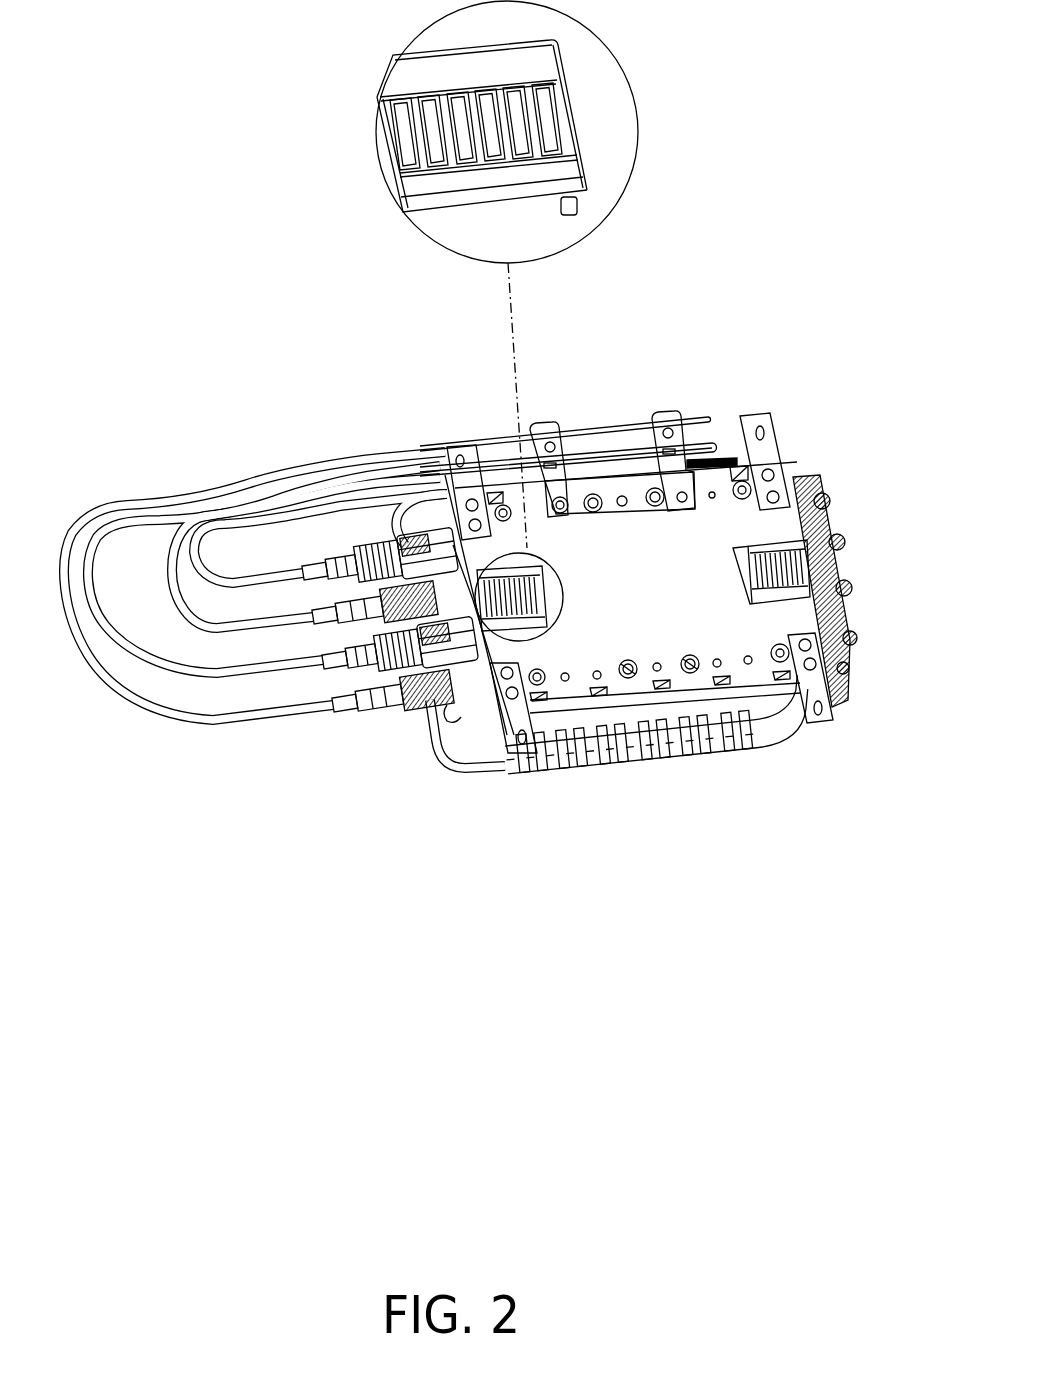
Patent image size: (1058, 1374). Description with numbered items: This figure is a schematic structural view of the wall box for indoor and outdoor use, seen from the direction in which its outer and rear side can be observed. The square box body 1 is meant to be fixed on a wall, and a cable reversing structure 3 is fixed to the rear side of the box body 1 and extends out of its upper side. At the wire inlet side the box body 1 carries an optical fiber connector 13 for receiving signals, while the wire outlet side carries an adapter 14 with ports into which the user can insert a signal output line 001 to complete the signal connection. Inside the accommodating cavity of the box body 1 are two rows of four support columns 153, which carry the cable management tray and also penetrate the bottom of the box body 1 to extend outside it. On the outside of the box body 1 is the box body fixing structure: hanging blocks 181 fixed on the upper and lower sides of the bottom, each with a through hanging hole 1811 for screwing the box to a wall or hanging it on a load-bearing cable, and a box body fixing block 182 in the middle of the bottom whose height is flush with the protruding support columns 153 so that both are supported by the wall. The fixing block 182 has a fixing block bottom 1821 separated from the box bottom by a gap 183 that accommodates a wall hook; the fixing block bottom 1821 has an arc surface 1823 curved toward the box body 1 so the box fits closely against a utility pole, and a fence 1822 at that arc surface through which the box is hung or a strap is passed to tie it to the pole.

The box body 1 is at (653, 617).
The cable reversing structure 3 is at (673, 472).
The optical fiber connector 13 is at (403, 693).
The adapter 14 is at (823, 497).
The support column 153 is at (687, 667).
The hanging block 181 is at (767, 458).
The hanging hole 1811 is at (463, 462).
The box body fixing block 182 is at (763, 592).
The fixing block bottom 1821 is at (410, 80).
The fence 1822 is at (511, 321).
The arc surface 1823 is at (388, 155).
The gap 183 is at (758, 600).
The signal output line 001 is at (210, 720).